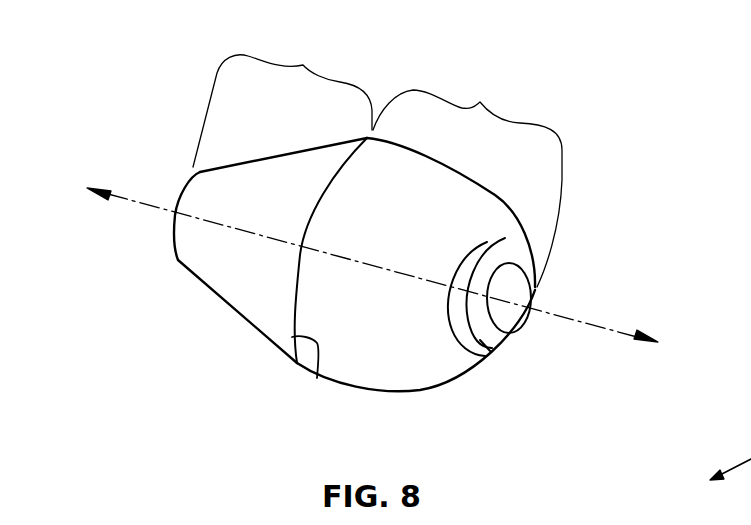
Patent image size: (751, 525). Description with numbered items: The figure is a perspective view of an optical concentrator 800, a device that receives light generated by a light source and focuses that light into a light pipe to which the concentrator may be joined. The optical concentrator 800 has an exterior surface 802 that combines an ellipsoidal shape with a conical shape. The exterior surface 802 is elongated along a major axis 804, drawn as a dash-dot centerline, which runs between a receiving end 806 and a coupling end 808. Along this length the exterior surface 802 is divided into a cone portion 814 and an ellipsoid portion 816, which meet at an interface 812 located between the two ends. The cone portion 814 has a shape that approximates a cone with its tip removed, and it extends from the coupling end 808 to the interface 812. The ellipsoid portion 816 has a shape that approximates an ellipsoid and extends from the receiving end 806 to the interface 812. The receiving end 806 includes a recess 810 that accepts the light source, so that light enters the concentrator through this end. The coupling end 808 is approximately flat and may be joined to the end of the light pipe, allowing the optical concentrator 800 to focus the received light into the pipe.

The optical concentrator 800 is at (637, 100).
The exterior surface 802 is at (388, 393).
The major axis 804 is at (124, 194).
The receiving end 806 is at (525, 297).
The coupling end 808 is at (176, 230).
The recess 810 is at (497, 350).
The interface 812 is at (316, 379).
The cone portion 814 is at (282, 100).
The ellipsoid portion 816 is at (467, 179).